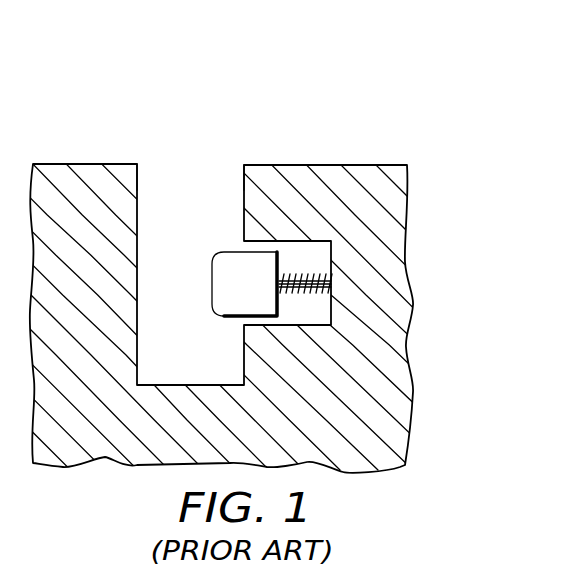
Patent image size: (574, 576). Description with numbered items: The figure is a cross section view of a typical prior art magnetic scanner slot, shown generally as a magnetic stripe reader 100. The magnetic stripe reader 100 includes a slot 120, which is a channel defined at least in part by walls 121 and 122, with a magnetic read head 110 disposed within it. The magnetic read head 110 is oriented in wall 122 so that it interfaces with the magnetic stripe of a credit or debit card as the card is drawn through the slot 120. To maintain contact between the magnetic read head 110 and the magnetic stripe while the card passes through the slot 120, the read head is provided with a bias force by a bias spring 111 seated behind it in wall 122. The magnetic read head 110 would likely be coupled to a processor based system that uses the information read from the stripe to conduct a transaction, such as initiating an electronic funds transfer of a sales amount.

The magnetic stripe reader 100 is at (390, 109).
The magnetic read head 110 is at (224, 296).
The bias spring 111 is at (304, 273).
The slot 120 is at (192, 157).
The wall 121 is at (139, 172).
The wall 122 is at (239, 172).